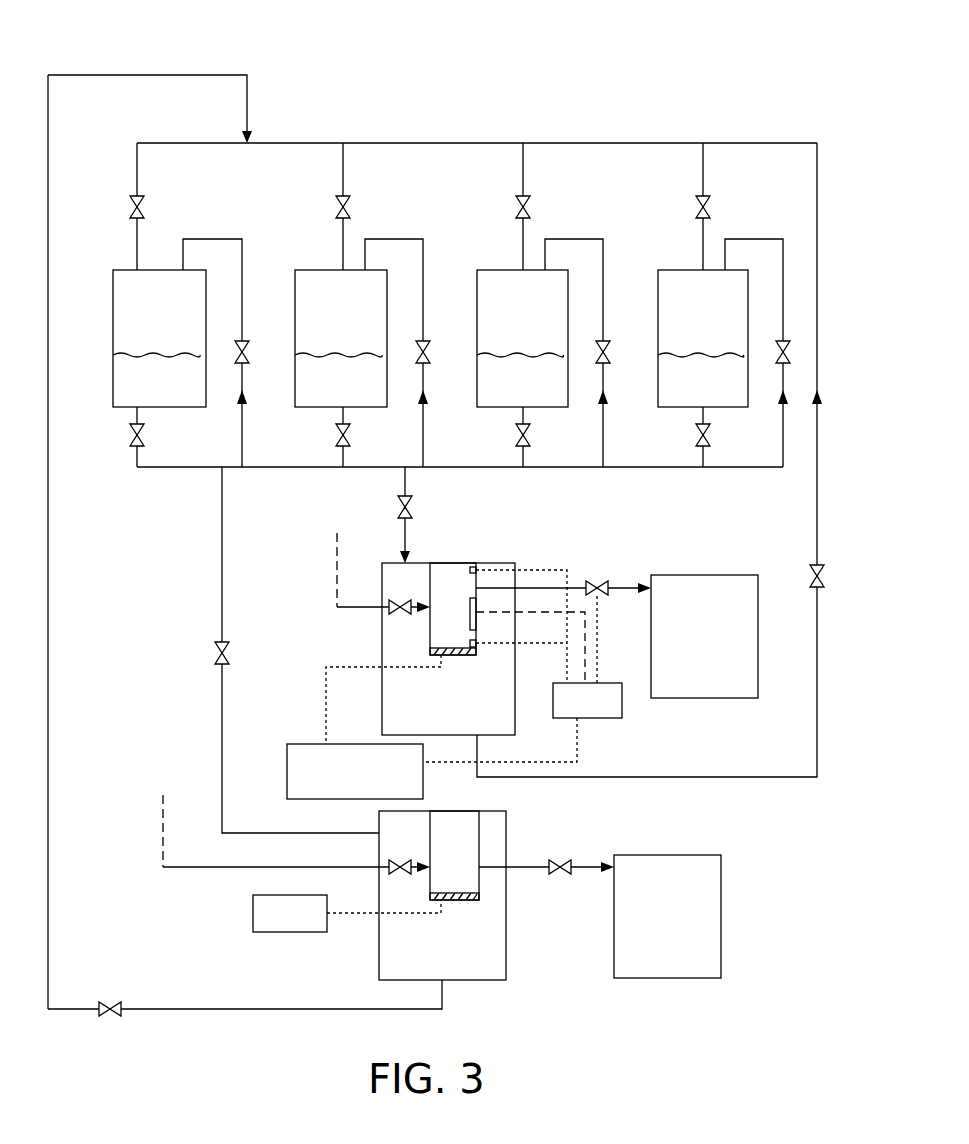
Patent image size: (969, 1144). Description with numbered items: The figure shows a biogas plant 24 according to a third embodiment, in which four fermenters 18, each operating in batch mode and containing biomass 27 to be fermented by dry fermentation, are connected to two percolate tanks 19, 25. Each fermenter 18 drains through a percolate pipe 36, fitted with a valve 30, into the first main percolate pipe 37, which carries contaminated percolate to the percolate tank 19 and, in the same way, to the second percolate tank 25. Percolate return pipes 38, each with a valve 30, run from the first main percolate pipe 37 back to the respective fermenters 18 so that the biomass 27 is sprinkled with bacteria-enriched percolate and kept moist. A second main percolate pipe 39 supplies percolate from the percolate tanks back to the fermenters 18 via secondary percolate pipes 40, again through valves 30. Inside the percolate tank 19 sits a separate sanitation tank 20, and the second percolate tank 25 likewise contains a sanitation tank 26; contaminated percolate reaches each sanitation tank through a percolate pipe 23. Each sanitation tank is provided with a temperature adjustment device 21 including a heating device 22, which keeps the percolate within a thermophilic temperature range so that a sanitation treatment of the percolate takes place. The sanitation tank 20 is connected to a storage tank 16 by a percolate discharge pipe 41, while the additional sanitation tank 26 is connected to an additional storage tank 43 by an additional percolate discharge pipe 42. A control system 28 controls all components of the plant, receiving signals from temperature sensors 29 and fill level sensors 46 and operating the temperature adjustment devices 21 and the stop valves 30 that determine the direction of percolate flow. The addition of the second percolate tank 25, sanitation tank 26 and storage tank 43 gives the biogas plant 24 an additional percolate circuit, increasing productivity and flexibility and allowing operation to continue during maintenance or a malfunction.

The storage tank 16 is at (704, 636).
The fermenter 18 is at (430, 338).
The percolate tank 19 is at (448, 649).
The sanitation tank 20 is at (453, 609).
The temperature adjustment device 21 is at (338, 823).
The heating device 22 is at (435, 774).
The percolate pipe 23 is at (296, 702).
The biogas plant 24 is at (810, 72).
The second percolate tank 25 is at (442, 895).
The sanitation tank 26 is at (454, 855).
The biomass 27 is at (428, 377).
The control system 28 is at (474, 741).
The temperature sensor 29 is at (470, 613).
The valve 30 is at (473, 606).
The percolate pipe 36 is at (460, 437).
The first main percolate pipe 37 is at (296, 650).
The percolate return pipe 38 is at (485, 338).
The second main percolate pipe 39 is at (435, 576).
The secondary percolate pipe 40 is at (456, 206).
The percolate discharge pipe 41 is at (563, 574).
The additional percolate discharge pipe 42 is at (546, 853).
The additional storage tank 43 is at (667, 916).
The fill level sensor 46 is at (475, 640).